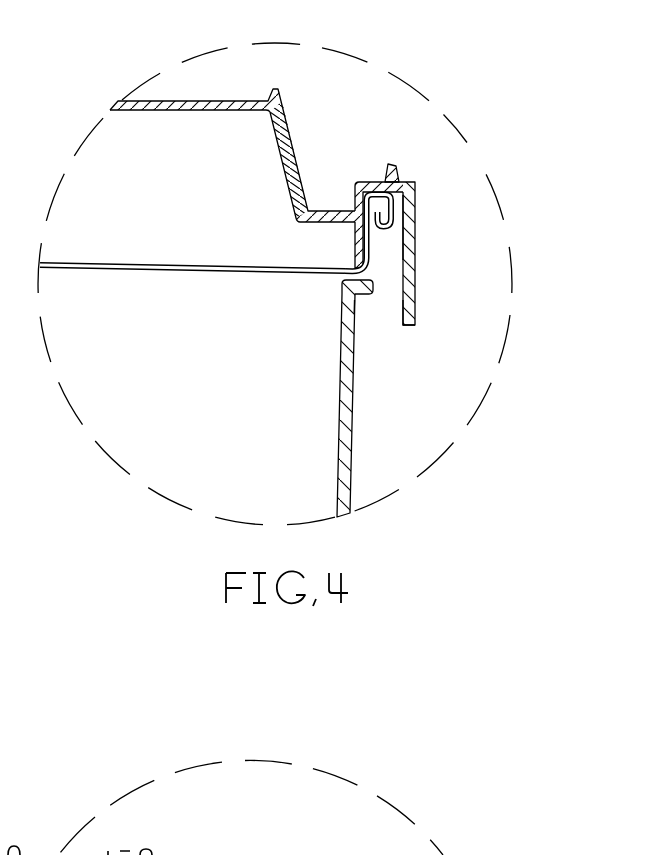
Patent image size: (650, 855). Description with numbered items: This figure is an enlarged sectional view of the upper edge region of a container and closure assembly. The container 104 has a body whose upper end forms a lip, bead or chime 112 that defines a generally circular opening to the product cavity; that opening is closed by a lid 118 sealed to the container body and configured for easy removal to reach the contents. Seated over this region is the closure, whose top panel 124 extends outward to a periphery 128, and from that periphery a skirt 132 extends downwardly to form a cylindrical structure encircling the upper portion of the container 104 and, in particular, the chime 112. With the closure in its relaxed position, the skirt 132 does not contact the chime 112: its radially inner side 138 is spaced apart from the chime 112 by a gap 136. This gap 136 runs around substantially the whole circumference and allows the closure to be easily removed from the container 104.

The container 104 is at (343, 411).
The chime 112 is at (375, 200).
The lid 118 is at (178, 310).
The top panel 124 is at (178, 100).
The periphery 128 is at (396, 168).
The skirt 132 is at (410, 282).
The gap 136 is at (520, 110).
The radially inner side 138 is at (392, 358).